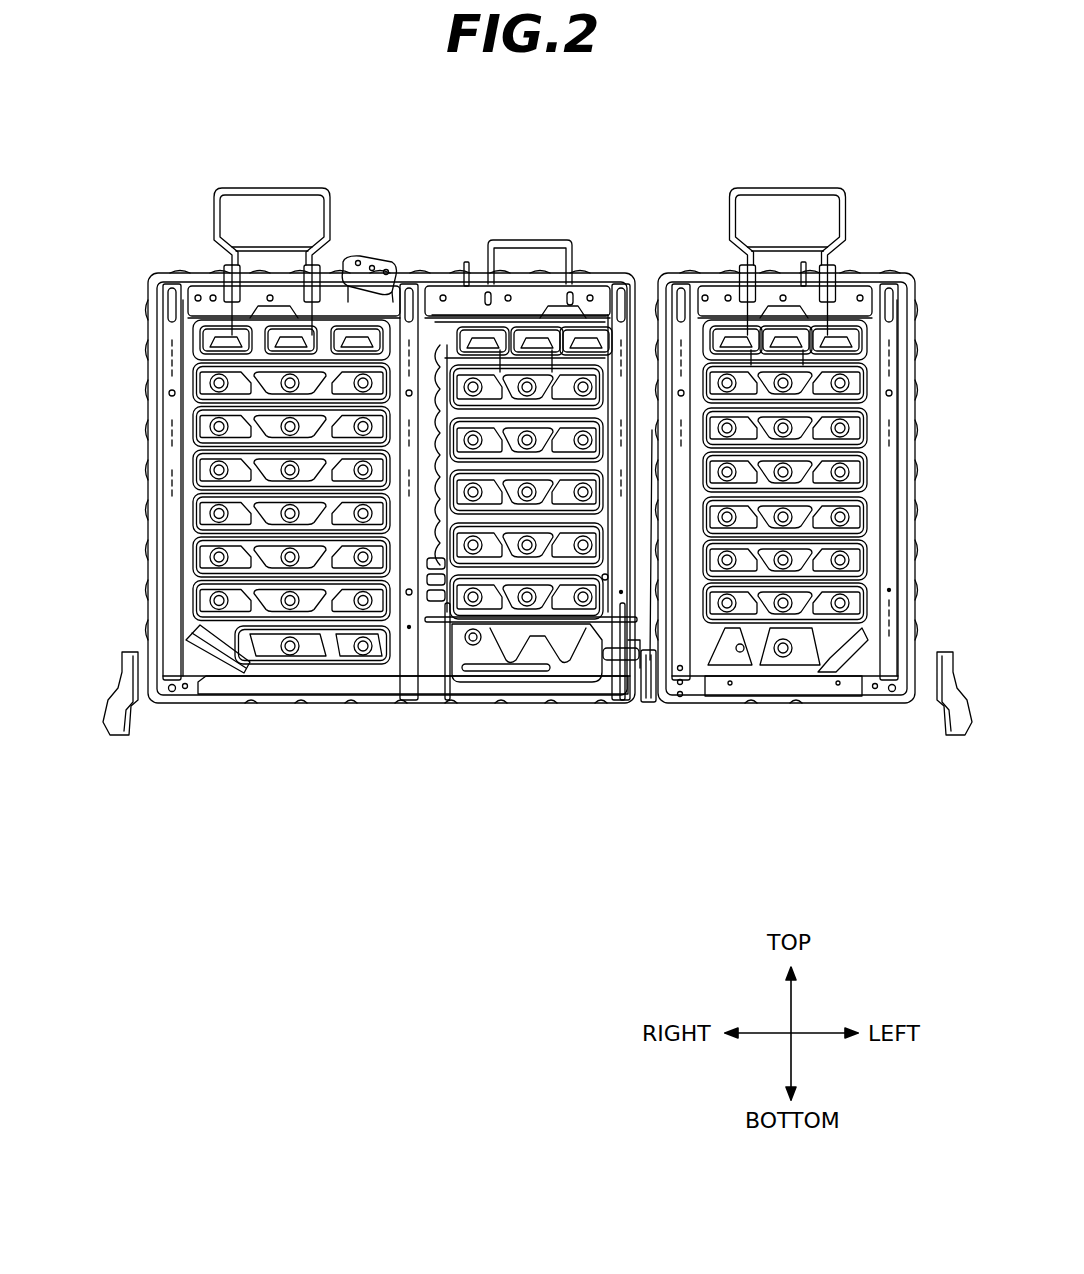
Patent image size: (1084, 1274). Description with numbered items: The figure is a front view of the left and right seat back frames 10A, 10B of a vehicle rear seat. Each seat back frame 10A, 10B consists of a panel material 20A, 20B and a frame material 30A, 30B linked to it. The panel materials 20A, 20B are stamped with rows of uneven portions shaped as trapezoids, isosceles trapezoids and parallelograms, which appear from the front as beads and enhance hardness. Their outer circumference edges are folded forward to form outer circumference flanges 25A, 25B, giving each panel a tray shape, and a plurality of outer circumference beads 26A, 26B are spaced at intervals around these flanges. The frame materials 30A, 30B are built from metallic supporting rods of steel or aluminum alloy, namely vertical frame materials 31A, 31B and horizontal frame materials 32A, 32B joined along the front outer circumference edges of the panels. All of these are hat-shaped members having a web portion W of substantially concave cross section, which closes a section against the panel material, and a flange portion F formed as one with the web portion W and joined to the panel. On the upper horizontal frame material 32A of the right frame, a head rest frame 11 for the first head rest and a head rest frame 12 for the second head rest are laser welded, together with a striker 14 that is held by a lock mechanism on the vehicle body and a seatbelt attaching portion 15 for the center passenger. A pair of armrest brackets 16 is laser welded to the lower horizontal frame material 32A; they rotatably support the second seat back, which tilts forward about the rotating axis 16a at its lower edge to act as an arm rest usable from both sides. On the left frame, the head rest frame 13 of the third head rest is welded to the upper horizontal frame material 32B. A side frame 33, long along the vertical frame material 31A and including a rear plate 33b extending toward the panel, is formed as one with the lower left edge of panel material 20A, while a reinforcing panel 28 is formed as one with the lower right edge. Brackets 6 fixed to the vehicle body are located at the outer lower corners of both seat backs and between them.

The seat back frame 10A is at (105, 186).
The seat back frame 10B is at (907, 265).
The head rest frame 11 is at (226, 187).
The head rest frame 12 is at (496, 240).
The head rest frame 13 is at (845, 188).
The striker 14 is at (468, 263).
The seatbelt attaching portion 15 is at (372, 260).
The armrest bracket 16 is at (448, 603).
The rotating axis 16a is at (487, 617).
The panel material 20A is at (562, 332).
The panel material 20B is at (850, 330).
The outer circumference flange 25A is at (147, 486).
The outer circumference flange 25B is at (912, 455).
The outer circumference bead 26A is at (171, 276).
The outer circumference bead 26B is at (652, 430).
The reinforcing panel 28 is at (180, 695).
The frame material 30A is at (198, 288).
The frame material 30B is at (868, 288).
The vertical frame material 31A is at (603, 283).
The vertical frame material 31B is at (680, 650).
The horizontal frame material 32A is at (512, 692).
The horizontal frame material 32B is at (810, 690).
The side frame 33 is at (640, 655).
The rear plate 33b is at (580, 665).
The bracket 6 is at (110, 712).
The flange portion F is at (176, 605).
The web portion W is at (178, 520).